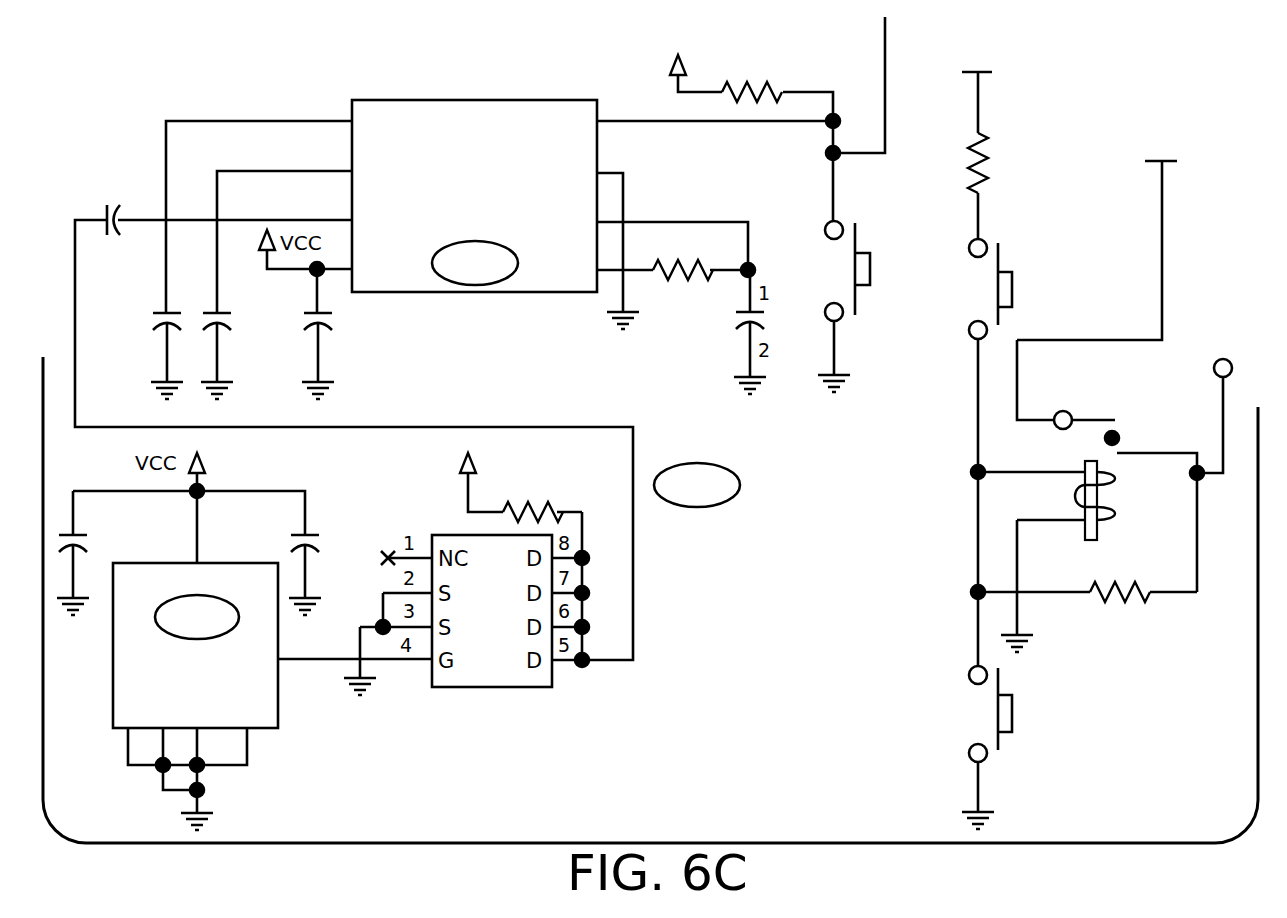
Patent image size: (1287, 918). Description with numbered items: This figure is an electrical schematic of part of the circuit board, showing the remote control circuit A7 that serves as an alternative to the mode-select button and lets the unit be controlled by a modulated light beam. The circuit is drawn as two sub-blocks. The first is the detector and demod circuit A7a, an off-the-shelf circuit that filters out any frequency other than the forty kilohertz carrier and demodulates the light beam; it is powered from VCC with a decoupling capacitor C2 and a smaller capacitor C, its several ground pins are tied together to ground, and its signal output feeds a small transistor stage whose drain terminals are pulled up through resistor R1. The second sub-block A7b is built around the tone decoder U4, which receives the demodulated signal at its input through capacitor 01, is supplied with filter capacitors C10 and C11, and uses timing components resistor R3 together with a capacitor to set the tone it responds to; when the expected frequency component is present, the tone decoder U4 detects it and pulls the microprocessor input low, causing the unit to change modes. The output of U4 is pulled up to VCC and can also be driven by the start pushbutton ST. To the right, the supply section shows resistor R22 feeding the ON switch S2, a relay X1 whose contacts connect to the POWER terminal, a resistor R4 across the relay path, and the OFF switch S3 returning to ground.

The tone decoder U4 is at (473, 180).
The timer sub-assembly A7b is at (475, 263).
The detector and demod circuit A7a is at (222, 676).
The remote control circuit A7 is at (697, 485).
The input coupling capacitor 01 is at (118, 225).
The 4.7uF filter capacitor C10 is at (248, 340).
The reset capacitor C11 is at (340, 342).
The 4.7uF supply capacitor C2 is at (106, 562).
The 0.1uF capacitor C is at (320, 562).
The 27k timing resistor R3 is at (684, 270).
The 1X resistor R1 is at (496, 486).
The 180 ohm resistor R22 is at (1001, 142).
The resistor R4 is at (1116, 580).
The start pushbutton switch ST is at (859, 293).
The ON switch S2 is at (1011, 305).
The OFF switch S3 is at (1010, 731).
The relay X1 is at (1097, 466).
The power terminal POWER is at (1171, 369).